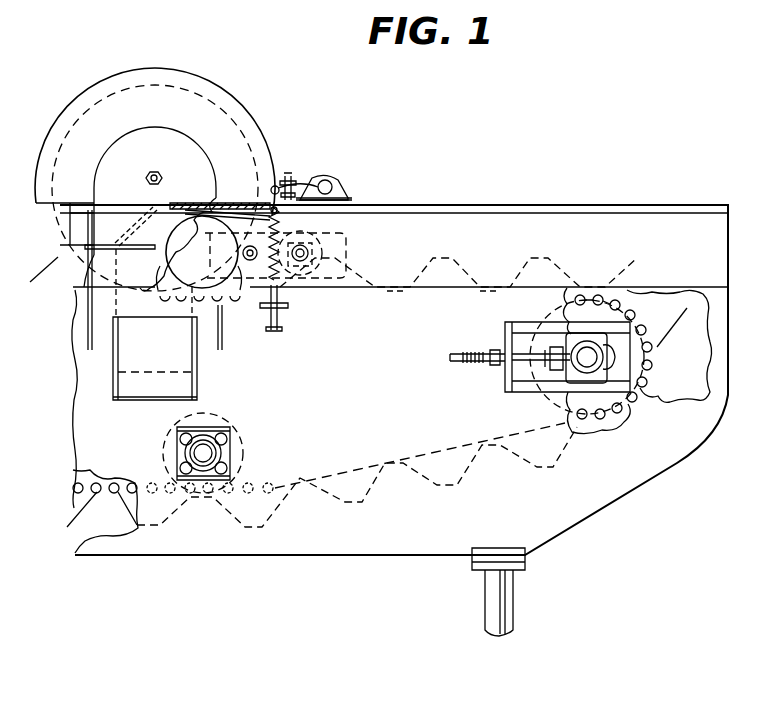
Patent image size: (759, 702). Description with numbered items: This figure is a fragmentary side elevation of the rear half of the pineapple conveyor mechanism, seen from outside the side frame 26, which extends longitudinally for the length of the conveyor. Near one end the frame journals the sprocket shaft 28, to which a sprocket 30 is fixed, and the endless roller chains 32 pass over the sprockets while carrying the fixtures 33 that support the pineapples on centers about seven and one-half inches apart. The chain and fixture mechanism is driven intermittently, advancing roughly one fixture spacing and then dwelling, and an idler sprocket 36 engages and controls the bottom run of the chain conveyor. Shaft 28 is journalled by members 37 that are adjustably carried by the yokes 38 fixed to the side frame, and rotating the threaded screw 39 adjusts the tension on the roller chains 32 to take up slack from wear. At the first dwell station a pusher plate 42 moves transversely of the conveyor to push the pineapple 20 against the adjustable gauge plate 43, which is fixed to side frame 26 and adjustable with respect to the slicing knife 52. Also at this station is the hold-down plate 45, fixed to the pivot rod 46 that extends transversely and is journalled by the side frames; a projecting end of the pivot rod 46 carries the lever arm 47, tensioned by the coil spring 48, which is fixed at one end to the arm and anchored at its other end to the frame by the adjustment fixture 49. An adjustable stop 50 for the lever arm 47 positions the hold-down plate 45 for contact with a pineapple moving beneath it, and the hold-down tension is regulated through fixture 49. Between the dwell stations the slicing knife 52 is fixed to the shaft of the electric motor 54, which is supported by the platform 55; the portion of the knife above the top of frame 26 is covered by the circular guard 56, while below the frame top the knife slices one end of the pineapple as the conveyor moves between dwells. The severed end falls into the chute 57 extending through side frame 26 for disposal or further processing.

The pineapple 20 is at (192, 232).
The side frame 26 is at (402, 541).
The sprocket shaft 28 is at (593, 360).
The sprocket 30 is at (585, 300).
The endless roller chains 32 is at (652, 282).
The fixtures 33 is at (462, 278).
The idler sprocket 36 is at (256, 456).
The journalling members 37 is at (578, 366).
The yokes 38 is at (512, 386).
The threaded screw 39 is at (476, 352).
The pusher plate 42 is at (318, 262).
The adjustable gauge plate 43 is at (340, 246).
The hold-down plate 45 is at (238, 214).
The pivot rod 46 is at (332, 186).
The lever arm 47 is at (312, 185).
The coil spring 48 is at (330, 222).
The adjustment fixture 49 is at (280, 320).
The adjustable stop 50 is at (292, 180).
The slicing knife 52 is at (137, 94).
The electric motor 54 is at (112, 163).
The platform 55 is at (76, 312).
The circular guard 56 is at (242, 78).
The chute 57 is at (120, 356).